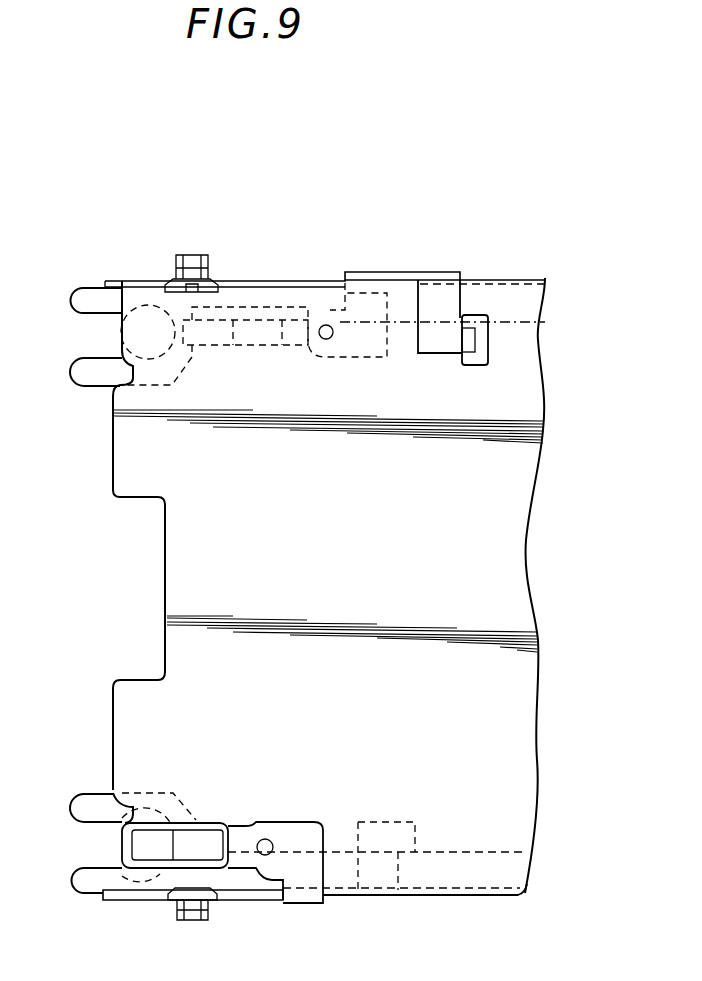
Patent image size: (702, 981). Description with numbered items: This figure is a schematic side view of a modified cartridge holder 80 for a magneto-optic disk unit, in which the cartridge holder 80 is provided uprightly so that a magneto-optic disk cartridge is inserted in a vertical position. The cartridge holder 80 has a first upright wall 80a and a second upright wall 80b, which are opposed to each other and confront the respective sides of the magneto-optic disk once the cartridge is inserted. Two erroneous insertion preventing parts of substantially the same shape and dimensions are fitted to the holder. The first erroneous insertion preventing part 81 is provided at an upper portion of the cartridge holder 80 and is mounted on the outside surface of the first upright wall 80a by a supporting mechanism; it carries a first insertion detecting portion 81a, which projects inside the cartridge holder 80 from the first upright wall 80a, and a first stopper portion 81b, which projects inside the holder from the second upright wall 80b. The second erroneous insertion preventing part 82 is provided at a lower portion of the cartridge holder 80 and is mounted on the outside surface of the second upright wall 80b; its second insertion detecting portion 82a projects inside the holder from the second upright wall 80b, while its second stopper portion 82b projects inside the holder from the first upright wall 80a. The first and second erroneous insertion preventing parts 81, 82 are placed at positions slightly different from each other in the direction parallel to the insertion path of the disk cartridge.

The cartridge holder 80 is at (554, 432).
The first upright wall 80a is at (192, 557).
The second upright wall 80b is at (122, 468).
The first erroneous insertion preventing part 81 is at (326, 312).
The first insertion detecting portion 81a is at (247, 322).
The first stopper portion 81b is at (490, 340).
The second erroneous insertion preventing part 82 is at (315, 830).
The second insertion detecting portion 82a is at (190, 836).
The second stopper portion 82b is at (418, 830).